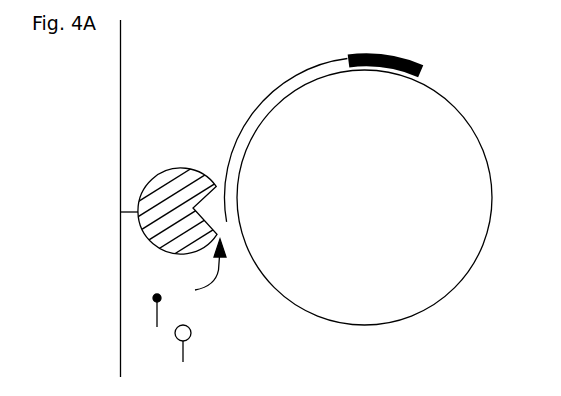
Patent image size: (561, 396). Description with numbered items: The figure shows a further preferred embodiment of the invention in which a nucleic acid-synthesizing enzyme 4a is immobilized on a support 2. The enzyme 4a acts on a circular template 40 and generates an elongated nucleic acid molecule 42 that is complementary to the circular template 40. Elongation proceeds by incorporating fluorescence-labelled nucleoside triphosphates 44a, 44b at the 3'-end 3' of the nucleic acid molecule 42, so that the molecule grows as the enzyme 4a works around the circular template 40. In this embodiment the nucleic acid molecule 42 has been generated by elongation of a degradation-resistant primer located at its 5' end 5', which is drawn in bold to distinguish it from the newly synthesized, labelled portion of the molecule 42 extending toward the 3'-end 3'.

The support 2 is at (113, 342).
The nucleic acid-synthesizing enzyme 4a is at (152, 168).
The circular template 40 is at (364, 204).
The elongated nucleic acid molecule 42 is at (272, 75).
The 5' end 5' is at (397, 68).
The 3'-end 3' is at (217, 262).
The fluorescence-labelled nucleoside triphosphate 44a is at (178, 310).
The fluorescence-labelled nucleoside triphosphate 44b is at (201, 345).